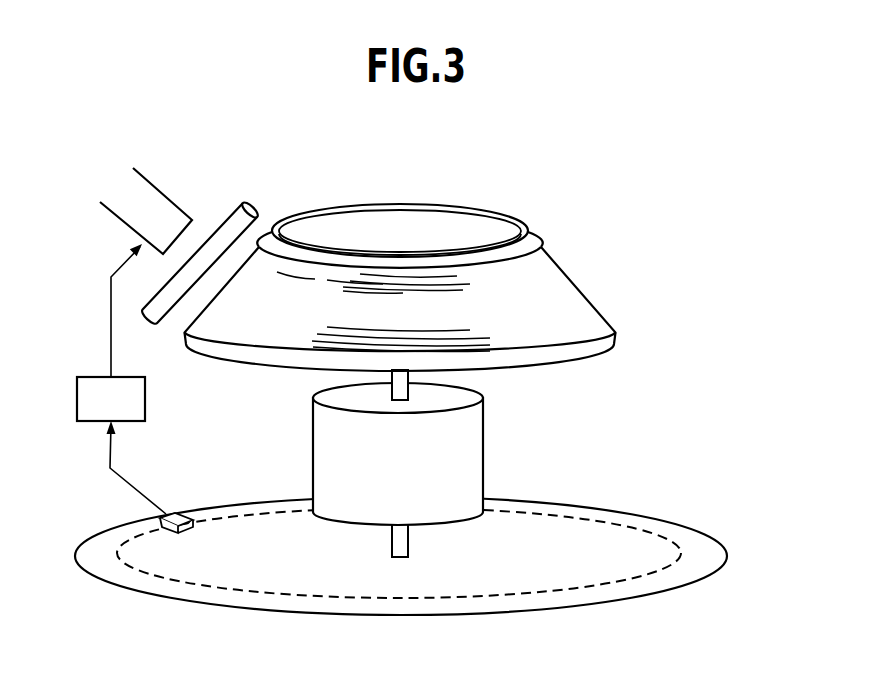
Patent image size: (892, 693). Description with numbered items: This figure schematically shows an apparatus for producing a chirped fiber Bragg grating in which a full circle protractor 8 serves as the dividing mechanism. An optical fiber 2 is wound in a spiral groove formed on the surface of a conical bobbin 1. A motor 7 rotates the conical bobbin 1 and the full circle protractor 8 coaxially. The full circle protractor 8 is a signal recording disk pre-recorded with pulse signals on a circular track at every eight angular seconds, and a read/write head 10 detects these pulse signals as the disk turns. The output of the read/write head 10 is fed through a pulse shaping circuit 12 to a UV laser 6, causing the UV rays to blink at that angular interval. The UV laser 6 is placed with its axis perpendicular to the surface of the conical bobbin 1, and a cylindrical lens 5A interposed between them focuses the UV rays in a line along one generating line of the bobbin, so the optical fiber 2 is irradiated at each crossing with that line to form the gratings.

The conical bobbin 1 is at (472, 208).
The optical fiber 2 is at (558, 285).
The cylindrical lens 5A is at (228, 208).
The UV laser 6 is at (155, 183).
The motor 7 is at (484, 440).
The full circle protractor 8 is at (606, 512).
The read/write head 10 is at (170, 515).
The pulse shaping circuit 12 is at (121, 379).